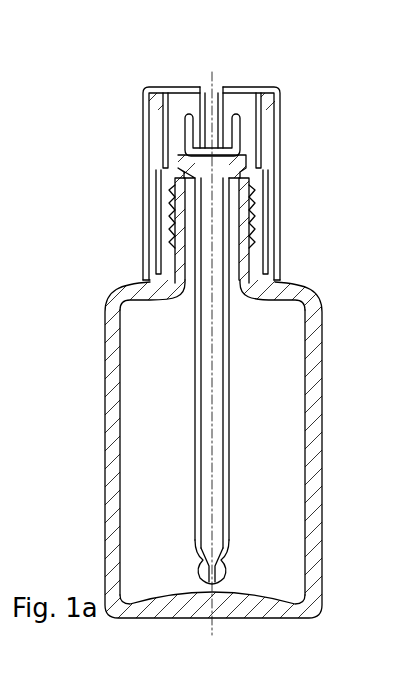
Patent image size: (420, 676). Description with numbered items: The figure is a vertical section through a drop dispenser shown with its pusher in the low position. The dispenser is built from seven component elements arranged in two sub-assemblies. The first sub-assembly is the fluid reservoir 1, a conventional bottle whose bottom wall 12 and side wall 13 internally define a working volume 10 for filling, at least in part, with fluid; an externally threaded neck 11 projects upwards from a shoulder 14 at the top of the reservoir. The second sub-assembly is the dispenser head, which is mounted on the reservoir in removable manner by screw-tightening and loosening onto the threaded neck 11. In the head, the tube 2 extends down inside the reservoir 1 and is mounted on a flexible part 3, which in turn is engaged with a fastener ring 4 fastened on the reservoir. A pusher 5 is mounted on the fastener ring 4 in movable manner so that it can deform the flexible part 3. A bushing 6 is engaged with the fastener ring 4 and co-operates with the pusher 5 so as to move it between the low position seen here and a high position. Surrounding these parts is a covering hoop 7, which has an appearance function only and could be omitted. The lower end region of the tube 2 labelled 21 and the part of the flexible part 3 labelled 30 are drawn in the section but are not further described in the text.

The fluid reservoir 1 is at (251, 457).
The tube 2 is at (296, 381).
The flexible part 3 is at (240, 104).
The fastener ring 4 is at (248, 170).
The pusher 5 is at (233, 82).
The bushing 6 is at (281, 210).
The covering hoop 7 is at (283, 238).
The working volume 10 is at (271, 420).
The threaded neck 11 is at (268, 250).
The bottom wall 12 is at (266, 604).
The side wall 13 is at (312, 500).
The shoulder 14 is at (298, 287).
The tube tip 21 is at (226, 578).
The seal element 30 is at (236, 152).